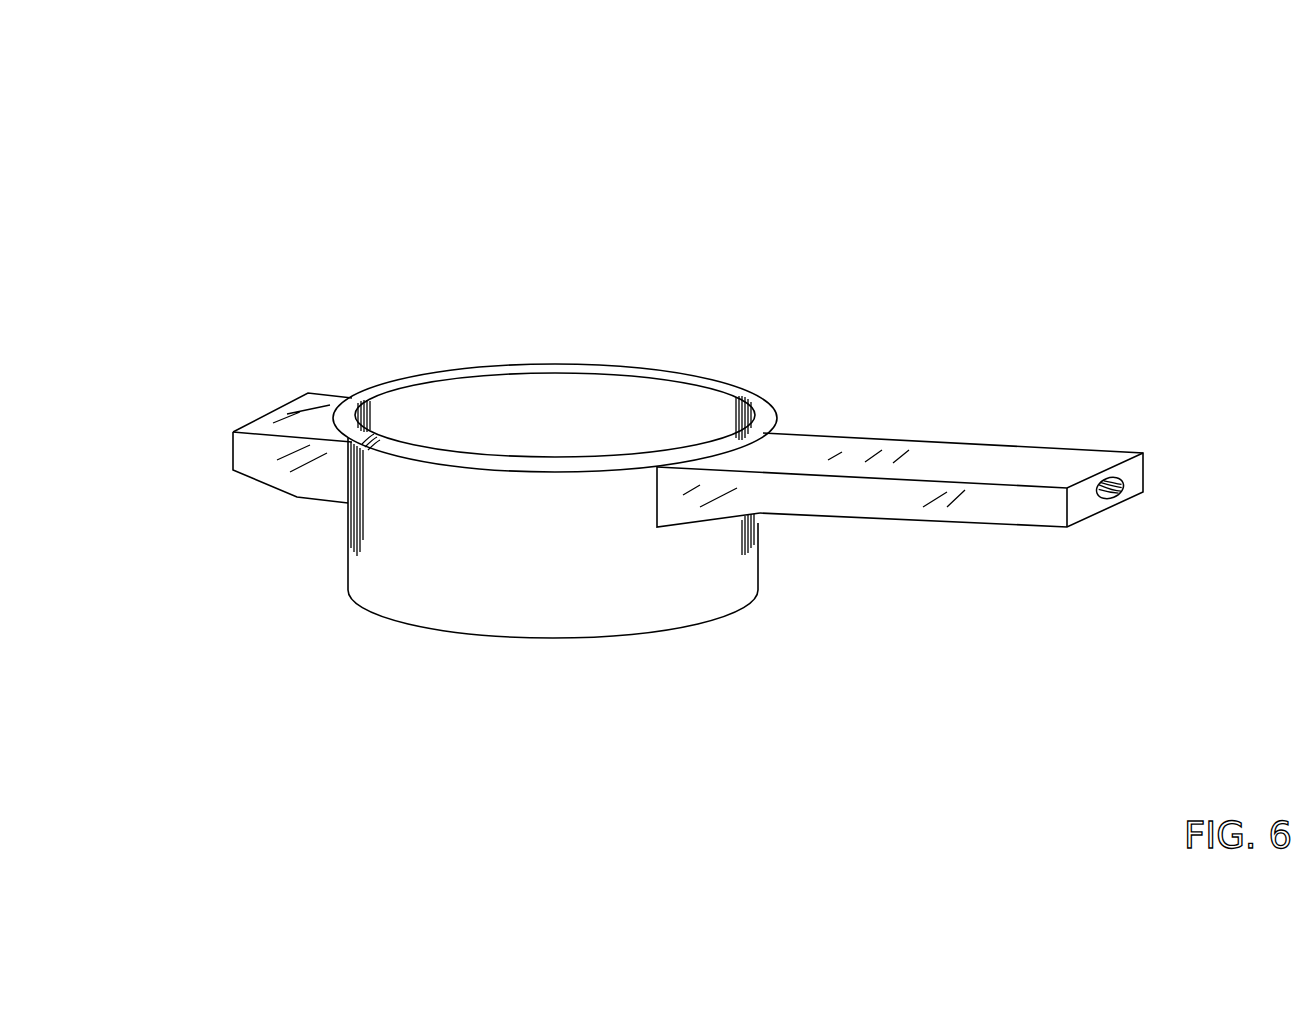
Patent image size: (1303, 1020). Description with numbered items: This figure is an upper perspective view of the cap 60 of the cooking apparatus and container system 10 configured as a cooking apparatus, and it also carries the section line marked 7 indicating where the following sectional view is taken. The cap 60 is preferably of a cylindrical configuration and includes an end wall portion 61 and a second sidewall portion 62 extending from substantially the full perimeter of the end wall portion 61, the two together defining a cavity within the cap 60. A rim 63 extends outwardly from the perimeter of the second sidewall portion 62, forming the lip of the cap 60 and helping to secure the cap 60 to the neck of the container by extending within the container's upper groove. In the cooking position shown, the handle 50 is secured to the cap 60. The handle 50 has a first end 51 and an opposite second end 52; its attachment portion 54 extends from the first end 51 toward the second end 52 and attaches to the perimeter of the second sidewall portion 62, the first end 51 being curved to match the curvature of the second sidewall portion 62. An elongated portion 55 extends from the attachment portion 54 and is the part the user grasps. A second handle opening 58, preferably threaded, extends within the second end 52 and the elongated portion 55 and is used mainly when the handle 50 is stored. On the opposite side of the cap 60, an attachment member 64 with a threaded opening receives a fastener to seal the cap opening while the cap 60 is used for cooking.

The cooking apparatus and container system 10 is at (967, 105).
The handle 50 is at (1050, 442).
The first end 51 is at (780, 433).
The second end 52 is at (1068, 525).
The attachment portion 54 is at (692, 520).
The elongated portion 55 is at (950, 510).
The second handle opening 58 is at (1150, 460).
The cap 60 is at (612, 363).
The end wall portion 61 is at (427, 630).
The second sidewall portion 62 is at (367, 563).
The rim 63 is at (418, 373).
The attachment member 64 is at (287, 403).
The section line 7- 7 is at (240, 410).